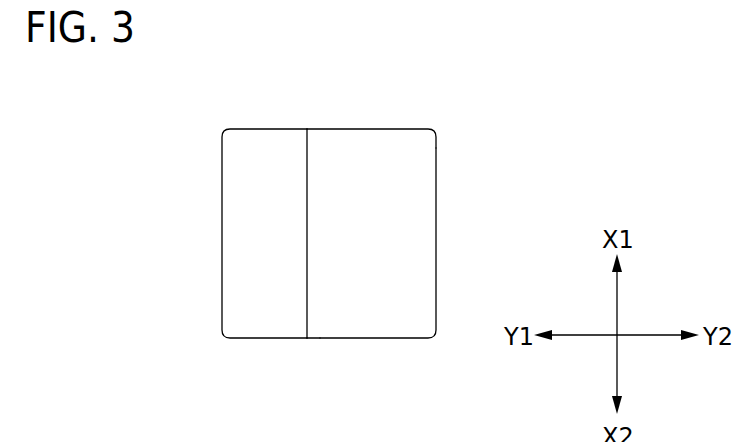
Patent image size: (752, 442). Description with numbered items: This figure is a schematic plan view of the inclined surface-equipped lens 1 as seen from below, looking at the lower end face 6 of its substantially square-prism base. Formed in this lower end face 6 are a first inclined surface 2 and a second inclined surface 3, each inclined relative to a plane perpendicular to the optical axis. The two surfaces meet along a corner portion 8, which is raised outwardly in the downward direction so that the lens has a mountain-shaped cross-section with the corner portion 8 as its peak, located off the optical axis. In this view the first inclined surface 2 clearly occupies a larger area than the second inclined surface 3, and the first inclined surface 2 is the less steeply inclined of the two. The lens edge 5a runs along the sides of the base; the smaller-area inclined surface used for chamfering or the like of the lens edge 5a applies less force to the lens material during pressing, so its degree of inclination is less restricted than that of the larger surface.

The inclined surface-equipped lens 1 is at (226, 84).
The first inclined surface 2 is at (366, 147).
The second inclined surface 3 is at (276, 148).
The lens edge 5a is at (436, 233).
The lower end face 6 is at (333, 258).
The corner portion 8 is at (308, 190).